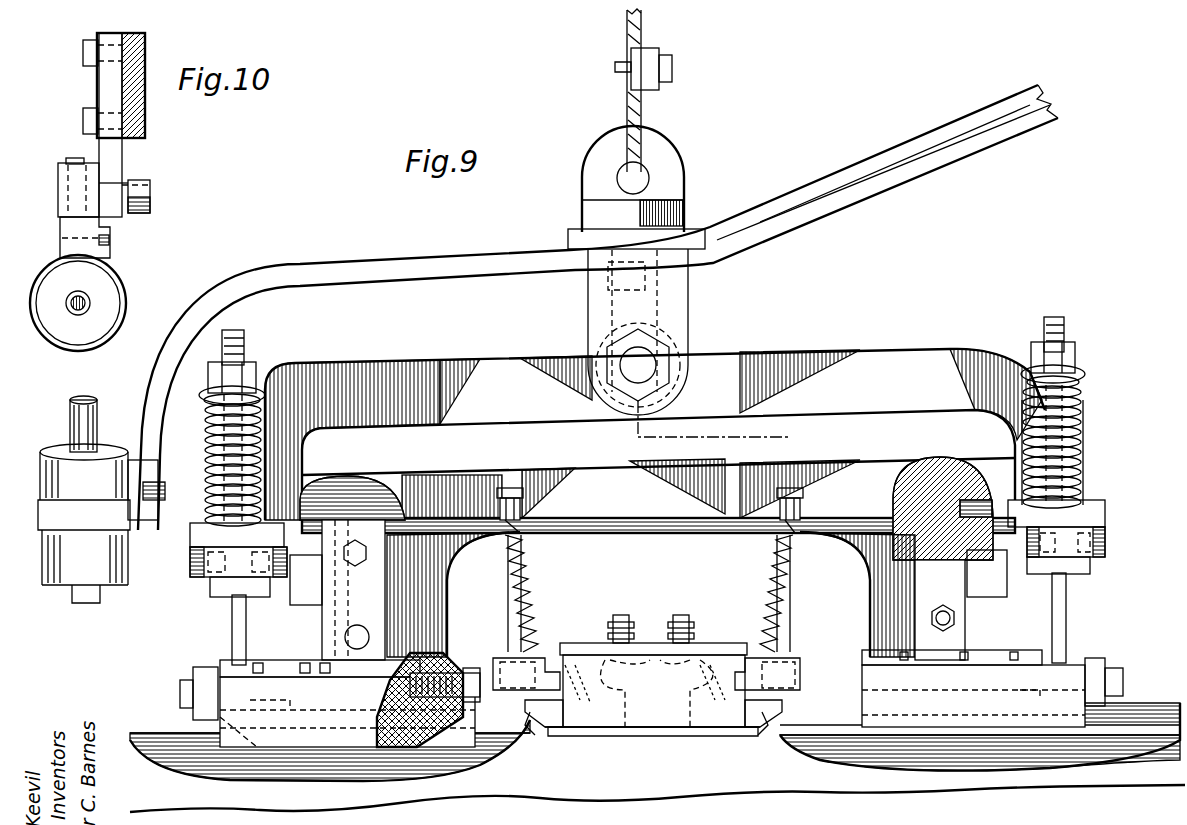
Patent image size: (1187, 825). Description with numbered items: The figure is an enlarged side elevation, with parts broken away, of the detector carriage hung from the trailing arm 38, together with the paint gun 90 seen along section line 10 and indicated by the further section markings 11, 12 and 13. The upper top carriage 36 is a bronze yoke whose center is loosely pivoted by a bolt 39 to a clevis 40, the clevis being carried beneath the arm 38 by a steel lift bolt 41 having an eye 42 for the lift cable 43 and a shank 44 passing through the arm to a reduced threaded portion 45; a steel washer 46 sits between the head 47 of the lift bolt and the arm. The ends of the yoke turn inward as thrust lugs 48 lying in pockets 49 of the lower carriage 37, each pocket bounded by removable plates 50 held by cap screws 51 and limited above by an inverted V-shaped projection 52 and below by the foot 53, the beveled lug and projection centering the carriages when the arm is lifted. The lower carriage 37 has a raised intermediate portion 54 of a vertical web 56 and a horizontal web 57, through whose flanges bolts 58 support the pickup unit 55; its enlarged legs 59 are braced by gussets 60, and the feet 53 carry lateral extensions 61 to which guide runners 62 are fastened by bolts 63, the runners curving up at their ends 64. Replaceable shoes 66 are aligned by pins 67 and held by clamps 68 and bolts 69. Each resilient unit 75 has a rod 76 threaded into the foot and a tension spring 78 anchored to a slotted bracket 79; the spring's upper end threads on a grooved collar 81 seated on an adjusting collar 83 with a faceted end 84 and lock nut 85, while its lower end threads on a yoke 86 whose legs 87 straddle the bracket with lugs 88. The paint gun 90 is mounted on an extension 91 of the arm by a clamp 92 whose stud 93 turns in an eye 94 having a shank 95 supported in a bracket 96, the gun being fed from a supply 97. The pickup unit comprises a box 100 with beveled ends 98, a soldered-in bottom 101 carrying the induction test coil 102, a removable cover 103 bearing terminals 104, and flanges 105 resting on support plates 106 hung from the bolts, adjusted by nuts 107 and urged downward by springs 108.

In FIG. 9, the section line 10— 10 is at (165, 433).
In FIG. 9, the section line 11- 11 is at (183, 540).
In FIG. 9, the section line 12-12 / rod connector 12 is at (664, 107).
In FIG. 9, the section line 13- 13 is at (1060, 300).
In FIG. 9, the upper top carriage 36 is at (796, 352).
In FIG. 9, the lower carriage 37 is at (853, 468).
In FIG. 9, the arm 38 is at (800, 193).
In FIG. 9, the bolt 39 is at (650, 362).
In FIG. 9, the clevis 40 is at (690, 318).
In FIG. 9, the lift bolt 41 is at (685, 208).
In FIG. 9, the eye 42 is at (606, 140).
In FIG. 9, the lift cable 43 is at (622, 28).
In FIG. 9, the shank 44 is at (605, 270).
In FIG. 9, the reduced threaded portion 45 is at (606, 302).
In FIG. 9, the steel washer 46 is at (585, 233).
In FIG. 9, the head 47 is at (592, 206).
In FIG. 9, the thrust lug 48 is at (300, 628).
In FIG. 9, the pocket 49 is at (983, 504).
In FIG. 9, the removable plate 50 is at (330, 650).
In FIG. 9, the cap screw 51 is at (357, 630).
In FIG. 9, the inverted V-shaped projection 52 is at (314, 492).
In FIG. 9, the foot 53 is at (322, 650).
In FIG. 9, the intermediate portion 54 is at (609, 532).
In FIG. 9, the pickup unit 55 is at (592, 660).
In FIG. 9, the vertical web 56 is at (599, 482).
In FIG. 9, the horizontal web 57 is at (688, 533).
In FIG. 9, the bolt 58 is at (519, 579).
In FIG. 9, the leg 59 is at (448, 614).
In FIG. 9, the gusset 60 is at (502, 588).
In FIG. 9, the lateral extension 61 is at (272, 740).
In FIG. 9, the guide runner 62 is at (349, 765).
In FIG. 9, the bolt 63 is at (965, 665).
In FIG. 9, the upwardly curved end 64 is at (500, 762).
In FIG. 9, the shoe 66 is at (420, 735).
In FIG. 9, the pin 67 is at (266, 700).
In FIG. 9, the clamp 68 is at (199, 676).
In FIG. 9, the bolt 69 is at (184, 692).
In FIG. 9, the resilient unit 75 is at (1086, 395).
In FIG. 9, the rod 76 is at (235, 345).
In FIG. 9, the tension spring 78 is at (262, 470).
In FIG. 9, the slotted bracket 79 is at (235, 590).
In FIG. 9, the grooved collar 81 is at (210, 380).
In FIG. 9, the adjusting collar 83 is at (1072, 368).
In FIG. 9, the faceted end 84 is at (250, 392).
In FIG. 9, the lock nut 85 is at (248, 372).
In FIG. 9, the yoke 86 is at (192, 540).
In FIG. 9, the leg 87 is at (193, 563).
In FIG. 9, the lug 88 is at (206, 576).
In FIG. 10, the paint gun 90 is at (112, 294).
In FIG. 9, the paint gun 90 is at (110, 562).
In FIG. 10, the extension 91 is at (140, 100).
In FIG. 9, the extension 91 is at (251, 270).
In FIG. 10, the clamp 92 is at (104, 266).
In FIG. 9, the clamp 92 is at (48, 498).
In FIG. 10, the stud 93 is at (68, 206).
In FIG. 10, the eye 94 is at (108, 185).
In FIG. 10, the shank 95 is at (140, 182).
In FIG. 10, the bracket 96 is at (121, 150).
In FIG. 9, the bracket 96 is at (136, 442).
In FIG. 10, the source of supply 97 is at (70, 308).
In FIG. 9, the source of supply 97 is at (76, 420).
In FIG. 9, the beveled end 98 is at (546, 740).
In FIG. 9, the box 100 is at (700, 660).
In FIG. 9, the bottom 101 is at (614, 730).
In FIG. 9, the induction test coil 102 is at (657, 738).
In FIG. 9, the cover 103 is at (647, 640).
In FIG. 9, the terminal 104 is at (681, 622).
In FIG. 9, the flange 105 is at (542, 655).
In FIG. 9, the support plate 106 is at (533, 684).
In FIG. 9, the nut 107 is at (522, 499).
In FIG. 9, the spring 108 is at (518, 553).